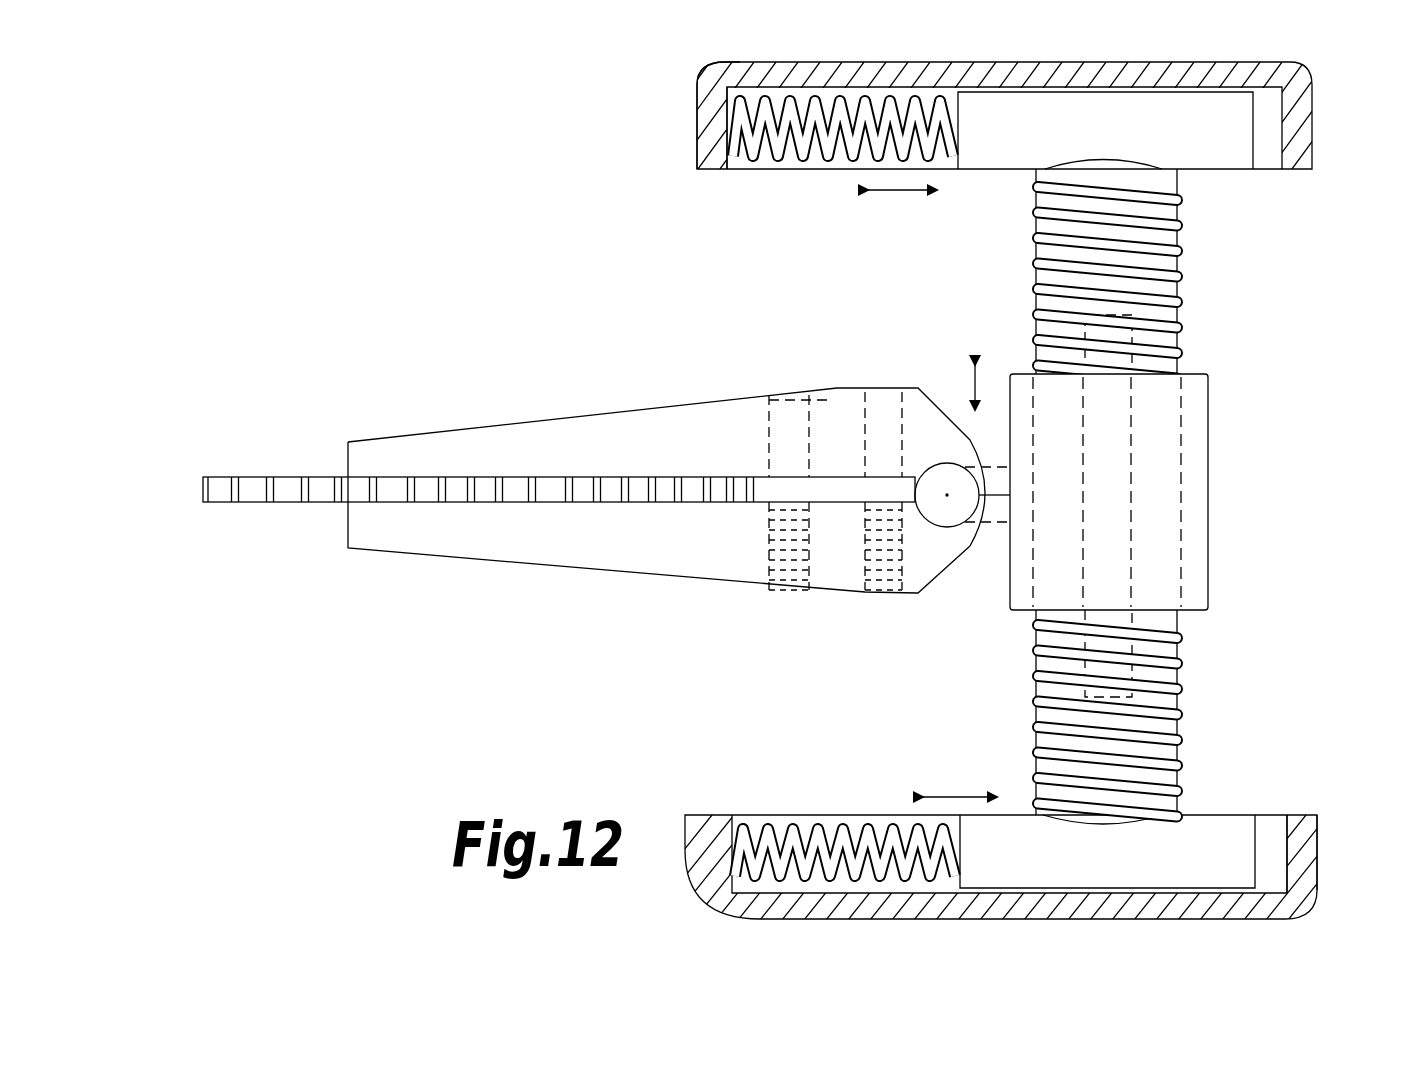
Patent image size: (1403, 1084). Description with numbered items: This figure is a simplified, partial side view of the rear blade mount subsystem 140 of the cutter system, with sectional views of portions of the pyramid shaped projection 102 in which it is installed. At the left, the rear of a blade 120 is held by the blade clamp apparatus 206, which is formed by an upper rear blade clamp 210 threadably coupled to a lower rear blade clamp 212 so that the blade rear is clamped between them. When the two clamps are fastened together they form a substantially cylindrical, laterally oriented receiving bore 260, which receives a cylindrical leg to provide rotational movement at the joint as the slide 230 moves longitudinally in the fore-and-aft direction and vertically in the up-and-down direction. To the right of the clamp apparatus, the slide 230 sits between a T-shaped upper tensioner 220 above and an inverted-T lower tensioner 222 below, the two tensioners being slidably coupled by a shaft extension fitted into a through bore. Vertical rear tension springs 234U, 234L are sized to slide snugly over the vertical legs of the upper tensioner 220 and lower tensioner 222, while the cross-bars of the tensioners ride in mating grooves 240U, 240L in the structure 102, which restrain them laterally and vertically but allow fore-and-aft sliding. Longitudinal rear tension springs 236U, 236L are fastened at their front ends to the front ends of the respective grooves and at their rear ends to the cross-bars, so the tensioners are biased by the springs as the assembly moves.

The pyramid shaped projection 102 is at (705, 142).
The blade 120 is at (252, 476).
The rear blade mount subsystem 140 is at (588, 330).
The blade clamp apparatus 206 is at (674, 385).
The upper rear blade clamp 210 is at (446, 428).
The lower rear blade clamp 212 is at (438, 556).
The upper tensioner 220 is at (1238, 170).
The lower tensioner 222 is at (1220, 815).
The slide 230 is at (1208, 440).
The vertical rear tension spring 234U is at (1180, 270).
The vertical rear tension spring 234L is at (1180, 663).
The longitudinal rear tension spring 236U is at (855, 160).
The longitudinal rear tension spring 236L is at (820, 826).
The groove 240U is at (742, 160).
The groove 240L is at (1273, 822).
The receiving bore 260 is at (947, 530).